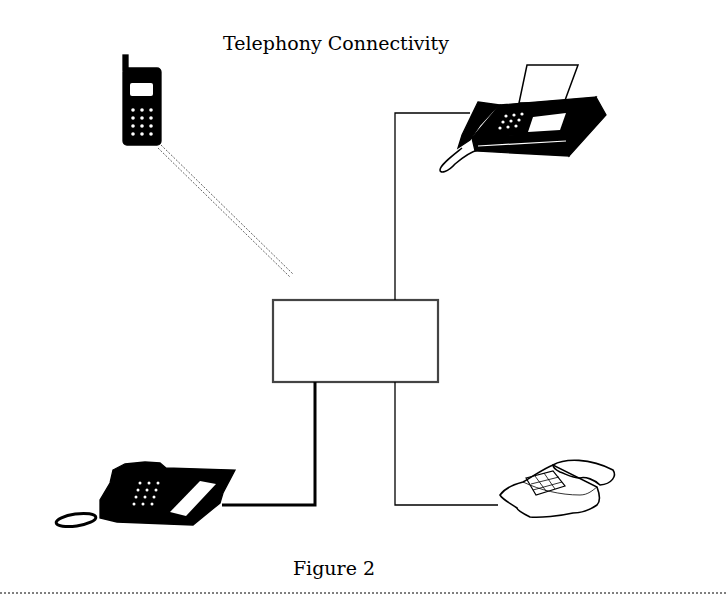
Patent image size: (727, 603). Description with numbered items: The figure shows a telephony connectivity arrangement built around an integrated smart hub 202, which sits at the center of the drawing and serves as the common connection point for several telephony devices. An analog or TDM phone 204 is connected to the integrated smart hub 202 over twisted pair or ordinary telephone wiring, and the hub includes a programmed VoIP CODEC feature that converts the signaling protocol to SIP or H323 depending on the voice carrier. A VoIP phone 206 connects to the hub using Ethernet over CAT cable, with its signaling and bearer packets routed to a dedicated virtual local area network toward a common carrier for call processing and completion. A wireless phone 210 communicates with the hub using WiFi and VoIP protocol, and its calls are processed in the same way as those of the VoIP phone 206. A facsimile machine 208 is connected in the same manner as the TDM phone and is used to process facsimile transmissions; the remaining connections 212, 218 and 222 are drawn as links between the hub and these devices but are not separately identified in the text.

The integrated smart hub 202 is at (438, 336).
The analog or Time Domain Multiplexing (TDM) phone 204 is at (313, 418).
The VoIP phone 206 is at (186, 458).
The fax machine 208 is at (510, 165).
The wireless phone 210 is at (143, 147).
The wired connection to analog telephone 212 is at (398, 408).
The analog telephone 218 is at (542, 460).
The wired connection to fax machine 222 is at (397, 225).